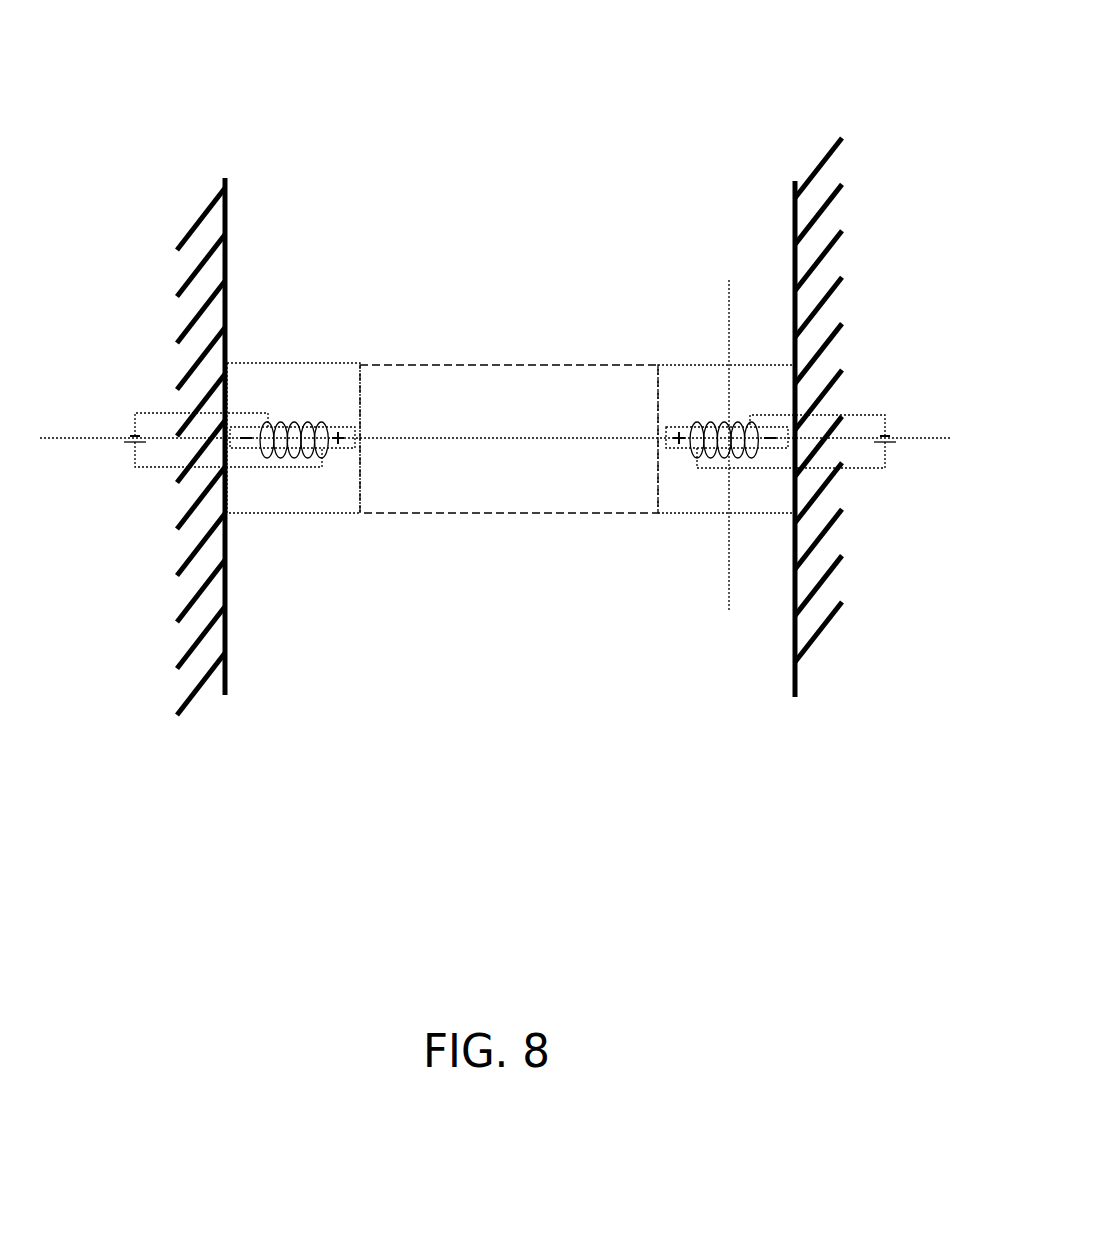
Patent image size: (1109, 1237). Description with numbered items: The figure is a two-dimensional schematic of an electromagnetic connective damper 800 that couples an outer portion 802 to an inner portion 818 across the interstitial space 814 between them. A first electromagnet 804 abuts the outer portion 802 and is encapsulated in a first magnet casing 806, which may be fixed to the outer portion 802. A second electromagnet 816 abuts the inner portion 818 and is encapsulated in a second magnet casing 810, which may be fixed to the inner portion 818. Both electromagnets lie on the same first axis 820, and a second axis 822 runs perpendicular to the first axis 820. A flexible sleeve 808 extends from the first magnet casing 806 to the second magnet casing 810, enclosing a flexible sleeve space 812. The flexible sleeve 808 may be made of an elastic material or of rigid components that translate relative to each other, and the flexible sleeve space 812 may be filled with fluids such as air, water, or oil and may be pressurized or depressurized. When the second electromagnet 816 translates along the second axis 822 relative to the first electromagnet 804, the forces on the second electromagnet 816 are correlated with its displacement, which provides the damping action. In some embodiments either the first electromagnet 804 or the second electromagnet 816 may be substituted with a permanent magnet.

The electromagnetic connective damper 800 is at (870, 975).
The outer portion 802 is at (222, 185).
The first electromagnet 804 is at (245, 427).
The first magnet casing 806 is at (275, 362).
The flexible sleeve 808 is at (575, 365).
The second magnet casing 810 is at (670, 365).
The flexible sleeve space 812 is at (437, 500).
The interstitial space 814 is at (573, 615).
The second electromagnet 816 is at (782, 462).
The inner portion 818 is at (796, 183).
The first axis 820 is at (488, 438).
The second axis 822 is at (731, 290).